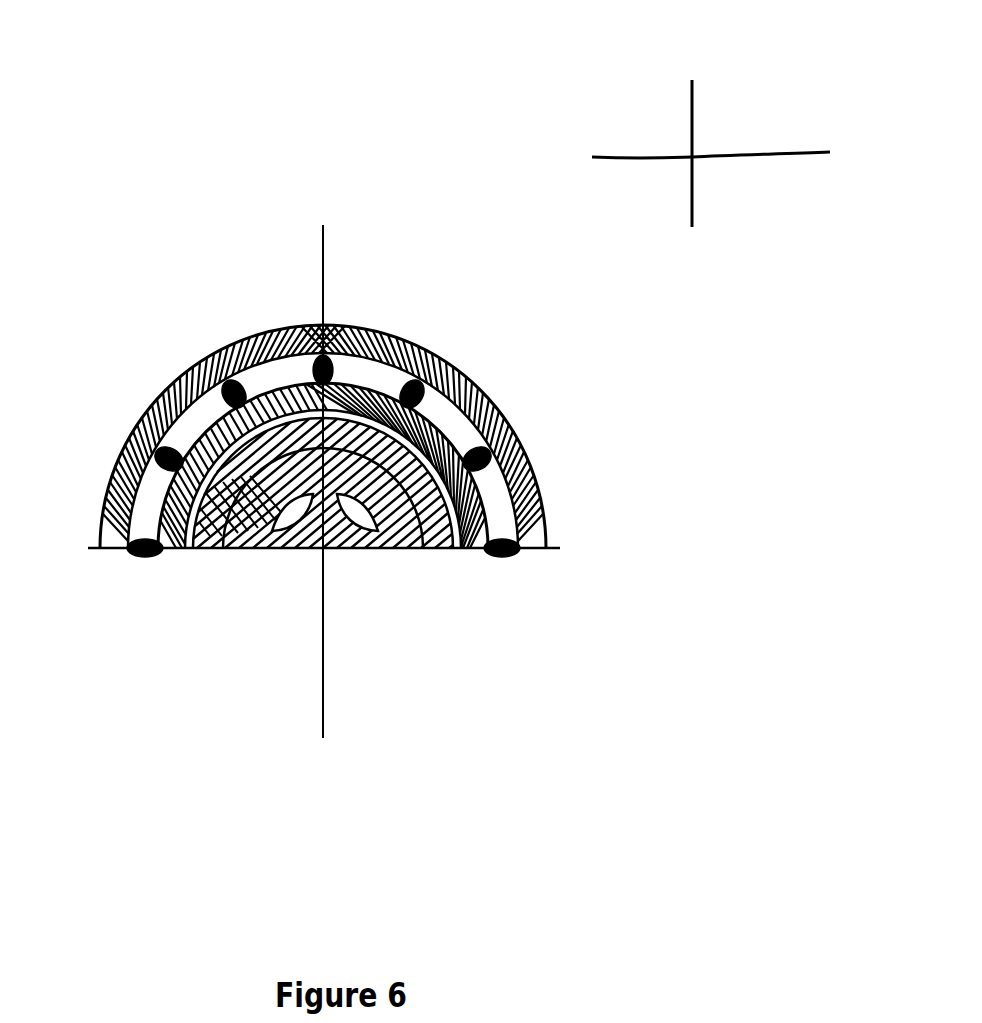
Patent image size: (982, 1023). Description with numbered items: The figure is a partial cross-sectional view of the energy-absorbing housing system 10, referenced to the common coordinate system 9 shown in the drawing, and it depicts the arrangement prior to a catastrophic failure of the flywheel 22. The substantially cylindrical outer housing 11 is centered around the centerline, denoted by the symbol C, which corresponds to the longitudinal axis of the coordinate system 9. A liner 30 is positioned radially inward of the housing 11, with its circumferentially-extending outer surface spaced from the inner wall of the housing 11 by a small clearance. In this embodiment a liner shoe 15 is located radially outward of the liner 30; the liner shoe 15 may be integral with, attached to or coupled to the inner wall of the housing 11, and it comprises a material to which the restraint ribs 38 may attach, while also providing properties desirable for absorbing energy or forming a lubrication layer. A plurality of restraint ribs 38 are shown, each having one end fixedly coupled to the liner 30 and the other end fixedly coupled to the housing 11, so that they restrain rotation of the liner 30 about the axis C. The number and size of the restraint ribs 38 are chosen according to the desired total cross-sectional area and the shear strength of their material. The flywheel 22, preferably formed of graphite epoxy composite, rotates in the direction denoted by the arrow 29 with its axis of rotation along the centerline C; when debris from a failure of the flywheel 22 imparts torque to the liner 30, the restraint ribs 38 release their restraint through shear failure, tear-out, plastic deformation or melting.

The coordinate system 9 is at (774, 70).
The energy-absorbing housing system 10 is at (343, 409).
The outer housing 11 is at (365, 335).
The liner shoe 15 is at (465, 377).
The flywheel 22 is at (190, 553).
The arrow 29 is at (190, 392).
The liner 30 is at (460, 550).
The restraint ribs 38 is at (508, 556).
The centerline C is at (327, 552).